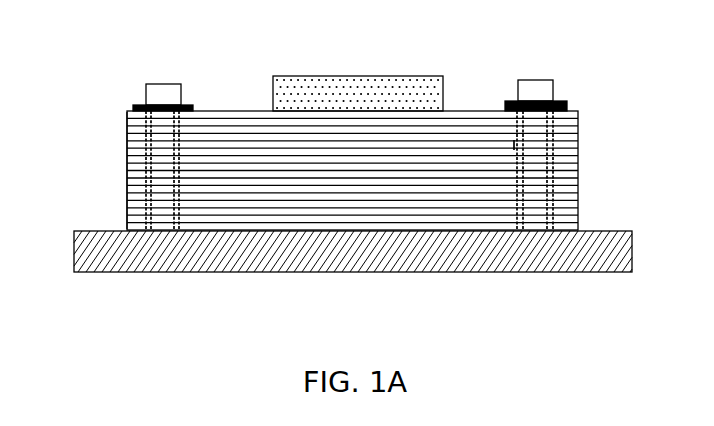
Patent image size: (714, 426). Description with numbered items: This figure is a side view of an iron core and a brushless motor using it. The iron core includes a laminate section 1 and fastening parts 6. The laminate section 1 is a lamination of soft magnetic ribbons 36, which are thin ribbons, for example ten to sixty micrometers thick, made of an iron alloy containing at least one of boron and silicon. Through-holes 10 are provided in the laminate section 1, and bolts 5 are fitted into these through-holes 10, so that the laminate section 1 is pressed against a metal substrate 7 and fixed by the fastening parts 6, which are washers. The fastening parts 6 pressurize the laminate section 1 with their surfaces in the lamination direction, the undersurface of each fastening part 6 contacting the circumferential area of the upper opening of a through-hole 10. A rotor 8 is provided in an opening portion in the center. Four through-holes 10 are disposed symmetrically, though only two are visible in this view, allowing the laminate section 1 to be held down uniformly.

The laminate section 1 is at (585, 112).
The bolt 5 is at (533, 80).
The fastening part 6 is at (566, 101).
The metal substrate 7 is at (353, 273).
The rotor 8 is at (345, 76).
The through-hole 10 is at (512, 145).
The soft magnetic ribbon 36 is at (127, 173).